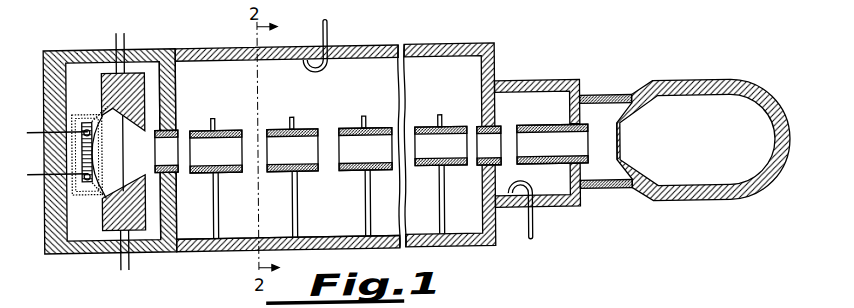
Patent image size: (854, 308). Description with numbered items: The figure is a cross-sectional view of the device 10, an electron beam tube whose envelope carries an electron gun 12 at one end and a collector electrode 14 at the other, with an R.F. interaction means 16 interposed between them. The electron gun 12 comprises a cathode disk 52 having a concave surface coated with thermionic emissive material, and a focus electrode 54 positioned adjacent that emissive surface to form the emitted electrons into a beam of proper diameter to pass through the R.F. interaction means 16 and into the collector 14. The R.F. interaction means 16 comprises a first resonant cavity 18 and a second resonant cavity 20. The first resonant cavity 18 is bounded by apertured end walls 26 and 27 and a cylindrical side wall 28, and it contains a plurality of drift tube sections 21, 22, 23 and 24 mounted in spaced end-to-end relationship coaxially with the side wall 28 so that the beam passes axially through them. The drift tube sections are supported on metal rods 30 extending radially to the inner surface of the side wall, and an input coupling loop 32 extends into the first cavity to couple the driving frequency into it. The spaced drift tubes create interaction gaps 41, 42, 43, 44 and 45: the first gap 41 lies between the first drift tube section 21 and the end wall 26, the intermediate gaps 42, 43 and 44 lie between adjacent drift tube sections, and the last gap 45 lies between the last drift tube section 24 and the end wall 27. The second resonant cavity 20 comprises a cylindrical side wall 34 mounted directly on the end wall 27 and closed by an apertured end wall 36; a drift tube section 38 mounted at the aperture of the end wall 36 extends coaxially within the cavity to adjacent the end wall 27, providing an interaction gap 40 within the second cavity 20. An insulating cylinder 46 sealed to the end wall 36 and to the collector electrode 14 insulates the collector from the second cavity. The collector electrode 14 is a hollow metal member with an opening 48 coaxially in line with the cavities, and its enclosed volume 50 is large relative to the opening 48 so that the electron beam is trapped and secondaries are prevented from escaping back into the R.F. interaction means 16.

The device 10 is at (448, 26).
The electron gun 12 is at (96, 45).
The collector electrode 14 is at (691, 113).
The R.F. interaction means 16 is at (541, 133).
The first resonant cavity 18 is at (210, 66).
The second resonant cavity 20 is at (548, 102).
The first drift tube section 21 is at (200, 126).
The drift tube section 22 is at (277, 128).
The drift tube section 23 is at (352, 127).
The last drift tube section 24 is at (423, 127).
The apertured end wall 26 is at (176, 93).
The apertured end wall 27 is at (482, 81).
The cylindrical side wall 28 is at (212, 248).
The metal rods 30 is at (217, 216).
The input coupling loop 32 is at (332, 30).
The cylindrical side wall 34 is at (520, 84).
The apertured end wall 36 is at (578, 98).
The drift tube section 38 is at (548, 127).
The interaction gap 40 is at (508, 130).
The first interaction gap 41 is at (182, 126).
The intermediate interaction gap 42 is at (250, 130).
The intermediate interaction gap 43 is at (327, 131).
The intermediate interaction gap 44 is at (395, 130).
The last interaction gap 45 is at (472, 128).
The insulating cylinder 46 is at (620, 100).
The opening 48 is at (617, 140).
The enclosed volume 50 is at (735, 112).
The cathode disk 52 is at (108, 110).
The focus electrode 54 is at (110, 73).